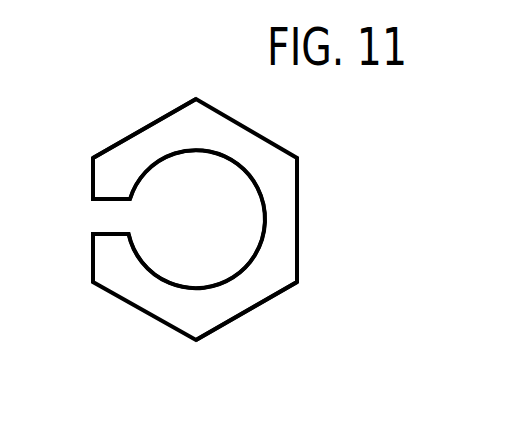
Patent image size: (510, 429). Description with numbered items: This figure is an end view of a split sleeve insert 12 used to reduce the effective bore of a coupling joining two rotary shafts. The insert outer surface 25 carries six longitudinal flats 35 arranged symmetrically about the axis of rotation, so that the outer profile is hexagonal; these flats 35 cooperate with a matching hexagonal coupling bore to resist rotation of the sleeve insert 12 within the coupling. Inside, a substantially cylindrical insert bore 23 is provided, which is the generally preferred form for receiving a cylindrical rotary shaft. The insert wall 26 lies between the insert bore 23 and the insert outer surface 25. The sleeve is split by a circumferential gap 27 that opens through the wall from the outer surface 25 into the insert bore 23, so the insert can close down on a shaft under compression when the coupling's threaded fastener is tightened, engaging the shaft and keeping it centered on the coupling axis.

The sleeve insert 12 is at (315, 262).
The insert bore 23 is at (224, 237).
The insert outer surface 25 is at (253, 308).
The insert wall 26 is at (155, 137).
The circumferential gap 27 is at (98, 217).
The flat 35 is at (100, 148).